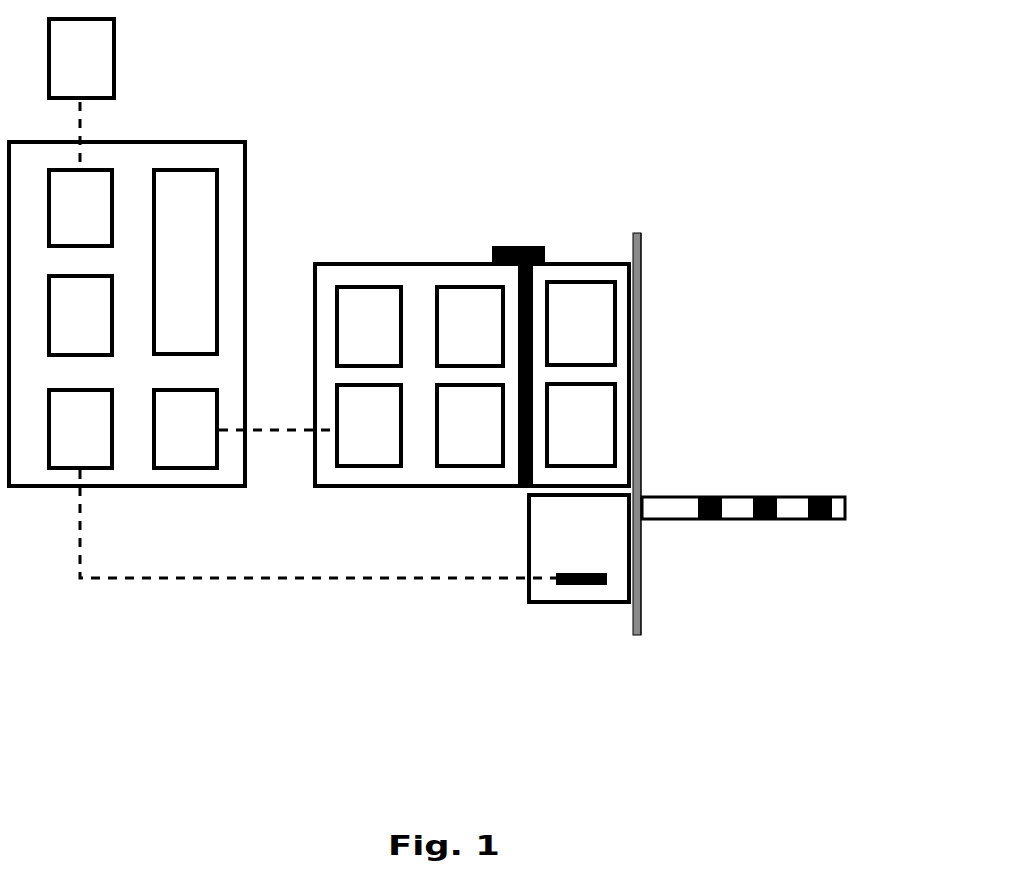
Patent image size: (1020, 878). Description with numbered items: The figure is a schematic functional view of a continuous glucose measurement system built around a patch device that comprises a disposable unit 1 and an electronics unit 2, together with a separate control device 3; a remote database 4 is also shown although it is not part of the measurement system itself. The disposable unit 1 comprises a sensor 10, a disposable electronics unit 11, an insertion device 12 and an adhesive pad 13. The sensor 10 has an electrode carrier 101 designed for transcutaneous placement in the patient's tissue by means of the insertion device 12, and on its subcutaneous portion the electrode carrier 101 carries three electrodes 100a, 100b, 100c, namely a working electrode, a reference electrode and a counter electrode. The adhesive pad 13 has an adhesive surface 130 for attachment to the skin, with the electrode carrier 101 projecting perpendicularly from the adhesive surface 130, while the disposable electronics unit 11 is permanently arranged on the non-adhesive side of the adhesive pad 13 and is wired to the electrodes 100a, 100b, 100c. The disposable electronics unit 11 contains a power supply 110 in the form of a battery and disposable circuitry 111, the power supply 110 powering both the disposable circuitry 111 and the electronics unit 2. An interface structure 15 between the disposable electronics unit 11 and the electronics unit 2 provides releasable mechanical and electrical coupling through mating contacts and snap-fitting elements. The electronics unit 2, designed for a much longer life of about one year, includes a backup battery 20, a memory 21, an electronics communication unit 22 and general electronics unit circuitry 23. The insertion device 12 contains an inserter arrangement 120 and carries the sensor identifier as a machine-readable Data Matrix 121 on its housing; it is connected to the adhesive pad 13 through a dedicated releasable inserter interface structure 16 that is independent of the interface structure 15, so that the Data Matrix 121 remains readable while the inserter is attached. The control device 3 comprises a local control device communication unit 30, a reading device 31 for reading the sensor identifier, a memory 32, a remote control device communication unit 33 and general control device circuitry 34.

The disposable unit 1 is at (597, 156).
The electronics unit 2 is at (400, 261).
The control device 3 is at (215, 139).
The remote database 4 is at (71, 75).
The sensor 10 is at (697, 542).
The disposable electronics unit 11 is at (571, 262).
The insertion device 12 is at (533, 614).
The adhesive pad 13 is at (642, 310).
The interface structure 15 is at (510, 243).
The inserter interface structure 16 is at (620, 610).
The backup battery 20 is at (453, 341).
The memory 21 is at (453, 440).
The electronics communication unit 22 is at (352, 440).
The general electronics unit circuitry 23 is at (352, 341).
The local control device communication unit 30 is at (168, 444).
The reading device 31 is at (63, 444).
The memory 32 is at (63, 331).
The remote control device communication unit 33 is at (63, 224).
The general control device circuitry 34 is at (168, 278).
The electrode 100a is at (710, 520).
The electrode 100b is at (767, 520).
The electrode 100c is at (823, 520).
The electrode carrier 101 is at (670, 503).
The power supply 110 is at (557, 337).
The disposable circuitry 111 is at (557, 439).
The inserter arrangement 120 is at (556, 553).
The Data Matrix 121 is at (581, 586).
The adhesive surface 130 is at (642, 396).